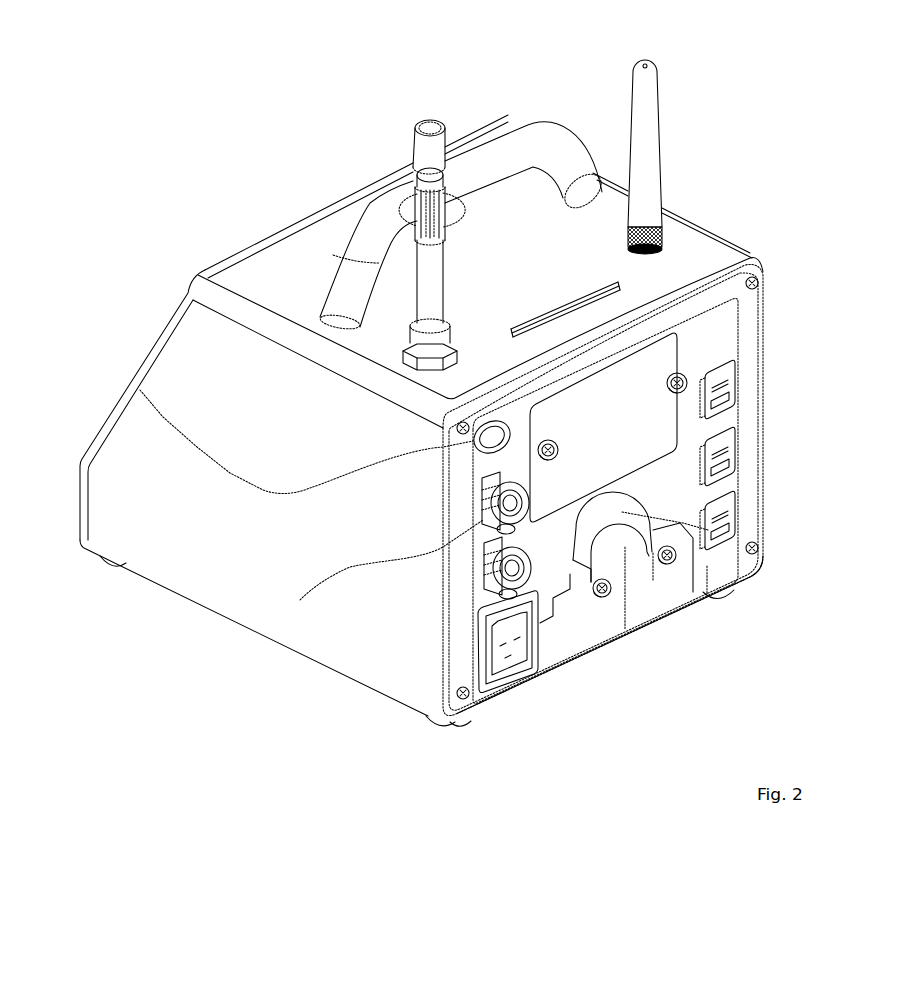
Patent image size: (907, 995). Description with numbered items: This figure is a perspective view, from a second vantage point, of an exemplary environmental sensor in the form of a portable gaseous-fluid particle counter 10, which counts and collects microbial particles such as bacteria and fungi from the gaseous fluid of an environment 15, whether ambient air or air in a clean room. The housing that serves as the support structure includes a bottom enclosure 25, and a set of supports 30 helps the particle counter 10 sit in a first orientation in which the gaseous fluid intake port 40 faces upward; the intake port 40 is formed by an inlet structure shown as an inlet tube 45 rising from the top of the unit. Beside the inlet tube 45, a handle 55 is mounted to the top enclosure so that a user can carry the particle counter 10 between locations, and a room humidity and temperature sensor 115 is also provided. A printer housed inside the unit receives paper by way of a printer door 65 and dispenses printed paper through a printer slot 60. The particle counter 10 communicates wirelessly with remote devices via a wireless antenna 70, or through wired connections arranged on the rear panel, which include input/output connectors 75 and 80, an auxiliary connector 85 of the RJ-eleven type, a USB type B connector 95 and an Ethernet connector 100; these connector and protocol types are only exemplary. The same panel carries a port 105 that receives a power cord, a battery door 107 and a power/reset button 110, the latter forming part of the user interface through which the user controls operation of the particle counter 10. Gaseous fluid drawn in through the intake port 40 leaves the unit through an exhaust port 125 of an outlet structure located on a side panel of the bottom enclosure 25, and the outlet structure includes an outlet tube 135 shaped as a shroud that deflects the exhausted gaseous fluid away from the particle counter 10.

The portable gaseous-fluid particle counter 10 is at (143, 610).
The environment 15 is at (422, 40).
The bottom enclosure 25 is at (713, 568).
The supports 30 is at (462, 732).
The gaseous fluid intake port 40 is at (427, 130).
The inlet tube 45 is at (420, 160).
The handle 55 is at (543, 133).
The printer slot 60 is at (543, 318).
The printer door 65 is at (637, 380).
The wireless antenna 70 is at (650, 92).
The input/output connector 75 is at (300, 600).
The input/output connector 80 is at (490, 572).
The RJ-11 auxiliary connector 85 is at (740, 360).
The USB type B connector 95 is at (740, 458).
The Ethernet connector 100 is at (738, 563).
The port 105 is at (493, 683).
The battery door 107 is at (590, 630).
The power/reset button 110 is at (140, 390).
The room humidity and temperature sensor 115 is at (430, 278).
The exhaust port 125 is at (641, 570).
The outlet tube 135 is at (717, 490).